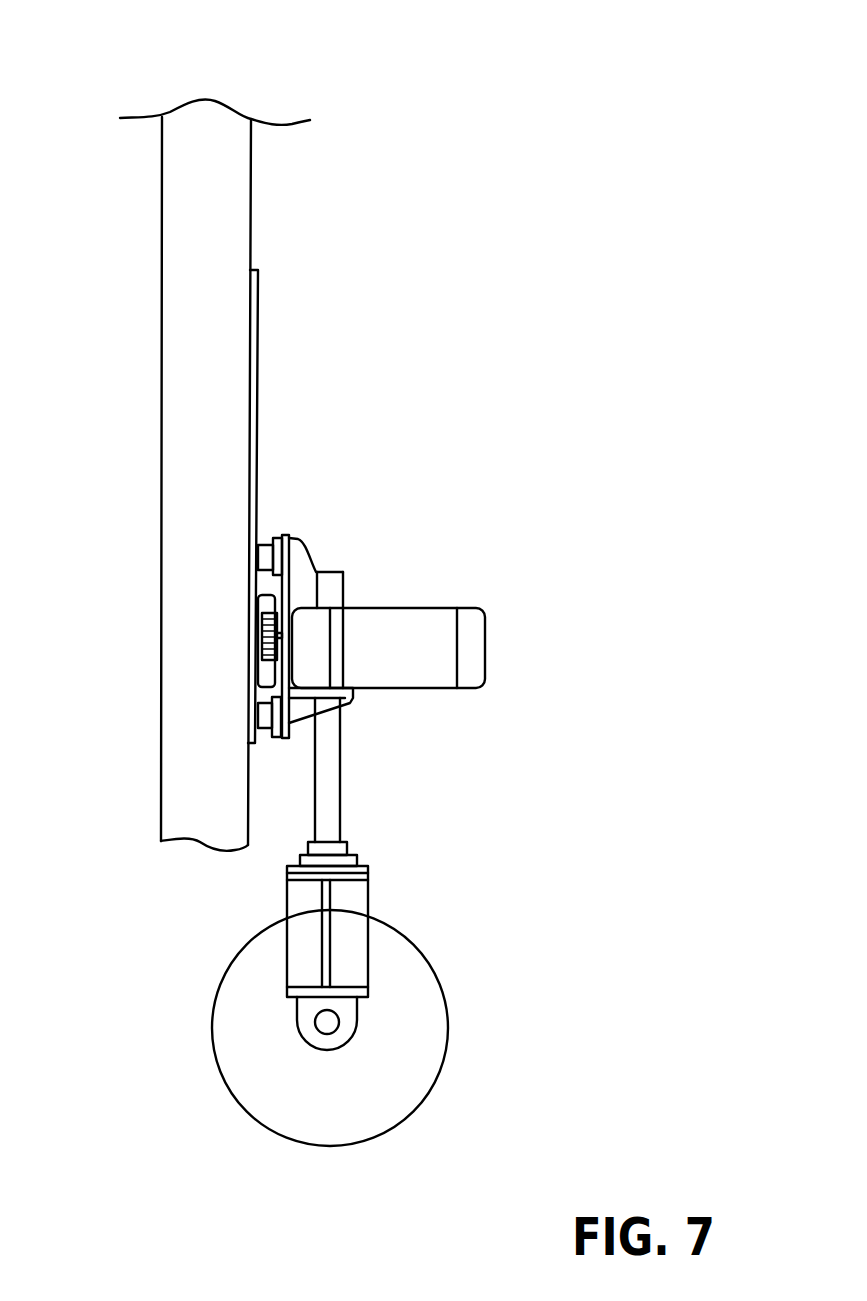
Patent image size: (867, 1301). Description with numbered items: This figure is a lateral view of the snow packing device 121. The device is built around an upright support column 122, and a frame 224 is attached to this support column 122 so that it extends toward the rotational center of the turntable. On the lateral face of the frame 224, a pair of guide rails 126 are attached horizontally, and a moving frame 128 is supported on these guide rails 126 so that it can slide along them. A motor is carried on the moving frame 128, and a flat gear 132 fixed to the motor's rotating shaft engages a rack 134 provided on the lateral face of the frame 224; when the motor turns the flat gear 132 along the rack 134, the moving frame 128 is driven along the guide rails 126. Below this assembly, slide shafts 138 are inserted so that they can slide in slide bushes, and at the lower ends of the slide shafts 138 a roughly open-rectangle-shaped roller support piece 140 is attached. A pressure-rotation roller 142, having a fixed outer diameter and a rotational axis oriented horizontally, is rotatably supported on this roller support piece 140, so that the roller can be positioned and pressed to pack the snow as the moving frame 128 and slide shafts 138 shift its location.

The snow packing device 121 is at (481, 112).
The support column 122 is at (162, 210).
The frame 224 is at (262, 378).
The guide rails 126 is at (260, 555).
The moving frame 128 is at (290, 520).
The flat gear 132 is at (264, 663).
The rack 134 is at (258, 597).
The slide shafts 138 is at (427, 688).
The roller support piece 140 is at (370, 897).
The pressure-rotation roller 142 is at (450, 1020).